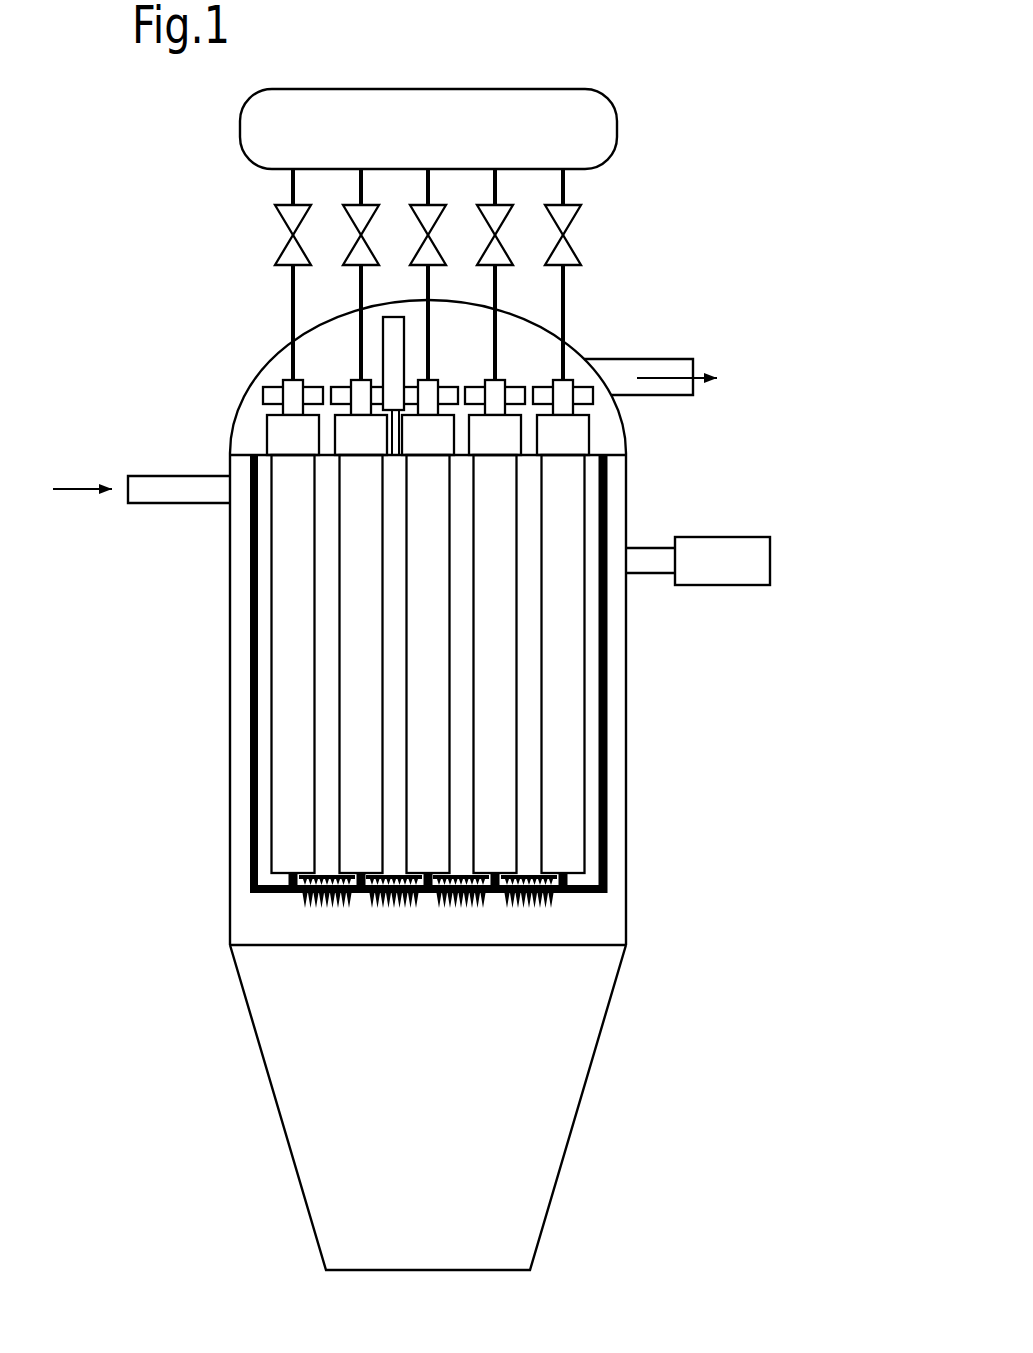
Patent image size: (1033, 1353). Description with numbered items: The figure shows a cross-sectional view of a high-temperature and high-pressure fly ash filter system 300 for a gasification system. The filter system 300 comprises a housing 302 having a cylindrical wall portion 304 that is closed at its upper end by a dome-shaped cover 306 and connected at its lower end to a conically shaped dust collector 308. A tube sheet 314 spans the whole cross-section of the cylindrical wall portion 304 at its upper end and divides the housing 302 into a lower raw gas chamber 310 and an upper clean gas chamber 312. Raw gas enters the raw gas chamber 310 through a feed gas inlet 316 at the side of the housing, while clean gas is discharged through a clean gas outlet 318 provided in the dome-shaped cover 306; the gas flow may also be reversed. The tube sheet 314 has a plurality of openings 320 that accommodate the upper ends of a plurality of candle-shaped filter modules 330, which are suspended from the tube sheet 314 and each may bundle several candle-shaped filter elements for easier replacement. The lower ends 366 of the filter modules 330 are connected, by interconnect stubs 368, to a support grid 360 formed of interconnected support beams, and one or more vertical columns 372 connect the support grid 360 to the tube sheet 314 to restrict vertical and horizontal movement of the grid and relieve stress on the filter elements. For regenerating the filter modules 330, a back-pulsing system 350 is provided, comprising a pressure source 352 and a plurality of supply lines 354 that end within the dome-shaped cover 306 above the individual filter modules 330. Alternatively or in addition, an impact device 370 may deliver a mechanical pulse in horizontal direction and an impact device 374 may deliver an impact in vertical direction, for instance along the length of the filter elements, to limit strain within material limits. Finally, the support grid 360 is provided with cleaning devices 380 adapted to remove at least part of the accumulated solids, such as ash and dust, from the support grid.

The filter system 300 is at (450, 743).
The housing 302 is at (628, 783).
The cylindrical wall portion 304 is at (228, 745).
The dome-shaped cover 306 is at (270, 363).
The dust collector 308 is at (568, 1145).
The raw gas chamber 310 is at (582, 900).
The clean gas chamber 312 is at (522, 340).
The tube sheet 314 is at (613, 459).
The feed gas inlet 316 is at (178, 505).
The clean gas outlet 318 is at (632, 359).
The openings 320 is at (270, 457).
The filter modules 330 is at (290, 843).
The back-pulsing system 350 is at (465, 242).
The pressure source 352 is at (448, 144).
The supply lines 354 is at (595, 218).
The support grid 360 is at (433, 717).
The lower ends 366 is at (570, 847).
The interconnect stubs 368 is at (578, 878).
The impact device 370 is at (766, 530).
The vertical columns 372 is at (607, 673).
The impact device 374 is at (396, 300).
The cleaning devices 380 is at (446, 913).